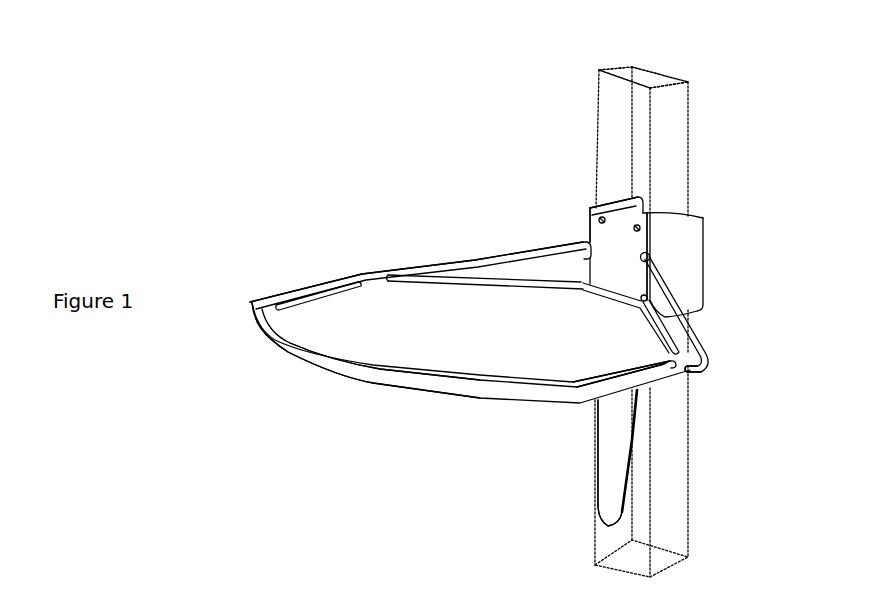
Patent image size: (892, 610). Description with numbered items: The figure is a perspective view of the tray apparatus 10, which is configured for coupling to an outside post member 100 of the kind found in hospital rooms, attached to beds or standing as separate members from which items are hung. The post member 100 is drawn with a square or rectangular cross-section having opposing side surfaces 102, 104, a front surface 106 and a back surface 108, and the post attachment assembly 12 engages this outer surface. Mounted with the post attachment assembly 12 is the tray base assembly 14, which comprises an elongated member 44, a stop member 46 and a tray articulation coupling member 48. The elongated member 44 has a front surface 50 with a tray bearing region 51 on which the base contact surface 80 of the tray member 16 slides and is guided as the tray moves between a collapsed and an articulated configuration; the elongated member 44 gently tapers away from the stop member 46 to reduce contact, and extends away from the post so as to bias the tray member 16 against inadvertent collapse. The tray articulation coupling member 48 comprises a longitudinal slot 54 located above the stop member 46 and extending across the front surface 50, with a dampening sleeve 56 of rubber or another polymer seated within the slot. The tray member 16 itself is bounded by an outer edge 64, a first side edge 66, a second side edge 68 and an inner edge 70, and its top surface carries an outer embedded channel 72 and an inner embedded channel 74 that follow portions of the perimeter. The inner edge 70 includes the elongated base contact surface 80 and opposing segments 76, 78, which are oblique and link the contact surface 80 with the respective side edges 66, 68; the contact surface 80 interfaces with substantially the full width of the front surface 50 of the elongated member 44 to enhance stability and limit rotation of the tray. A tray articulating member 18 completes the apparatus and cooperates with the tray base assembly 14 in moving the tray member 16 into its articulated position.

The tray apparatus 10 is at (378, 153).
The post attachment assembly 12 is at (692, 247).
The tray base assembly 14 is at (600, 484).
The tray member 16 is at (290, 290).
The tray articulating member 18 is at (522, 247).
The elongated member 44 is at (634, 408).
The stop member 46 is at (617, 250).
The tray articulation coupling member 48 is at (602, 238).
The front surface 50 is at (605, 427).
The tray bearing region 51 is at (613, 451).
The longitudinal slot 54 is at (610, 285).
The dampening sleeve 56 is at (641, 226).
The outer edge 64 is at (330, 363).
The first side edge 66 is at (666, 372).
The second side edge 68 is at (356, 271).
The inner edge 70 is at (654, 300).
The outer embedded channel 72 is at (387, 369).
The inner embedded channel 74 is at (661, 330).
The opposing segment 76 is at (682, 338).
The opposing segment 78 is at (483, 272).
The base contact surface 80 is at (582, 284).
The post member 100 is at (680, 74).
The side surface 102 is at (620, 70).
The side surface 104 is at (673, 114).
The front surface 106 is at (612, 108).
The back surface 108 is at (651, 75).